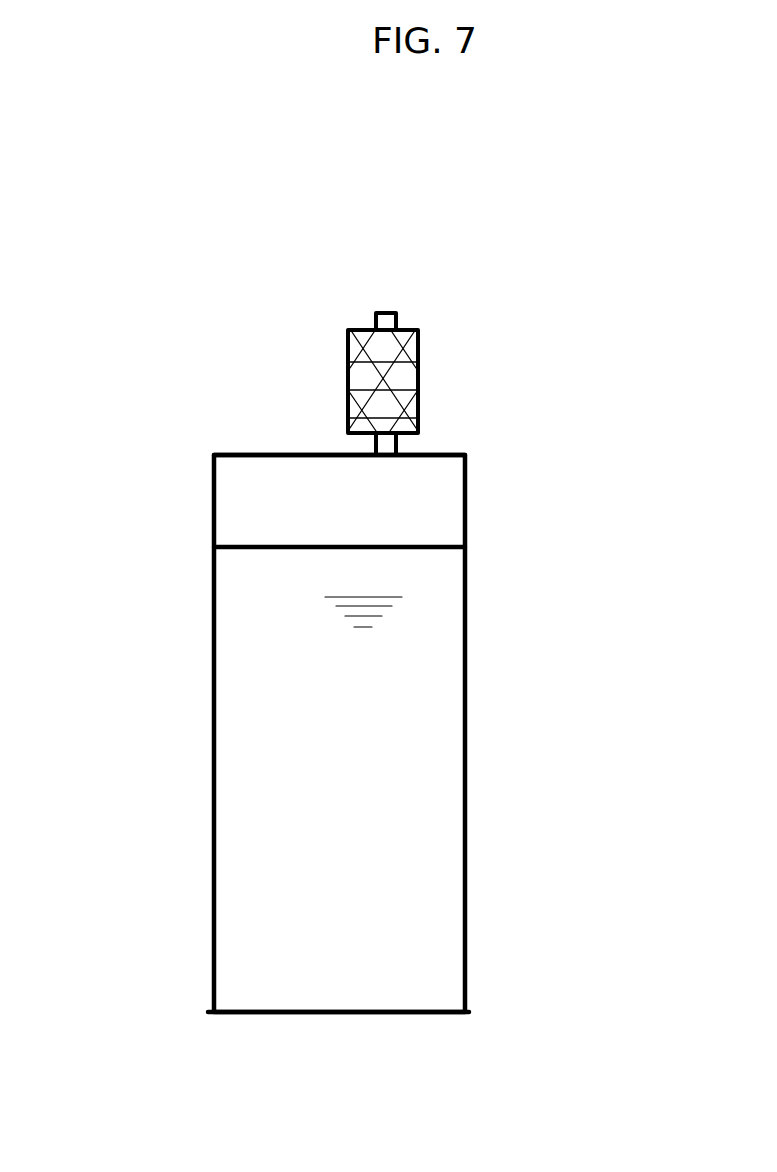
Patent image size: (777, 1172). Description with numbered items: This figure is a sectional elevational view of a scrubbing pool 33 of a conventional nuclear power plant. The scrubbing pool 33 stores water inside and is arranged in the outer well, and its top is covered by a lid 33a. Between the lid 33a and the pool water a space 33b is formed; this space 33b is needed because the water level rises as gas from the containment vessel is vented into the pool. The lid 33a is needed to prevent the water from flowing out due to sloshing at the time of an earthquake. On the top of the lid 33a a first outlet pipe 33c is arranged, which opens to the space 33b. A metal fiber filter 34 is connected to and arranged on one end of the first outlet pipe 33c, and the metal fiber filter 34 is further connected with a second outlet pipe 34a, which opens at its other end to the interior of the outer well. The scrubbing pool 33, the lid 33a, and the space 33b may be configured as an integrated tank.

The scrubbing pool 33 is at (215, 753).
The lid 33a is at (257, 450).
The space 33b is at (263, 495).
The first outlet pipe 33c is at (390, 442).
The metal fiber filter 34 is at (412, 372).
The second outlet pipe 34a is at (378, 310).